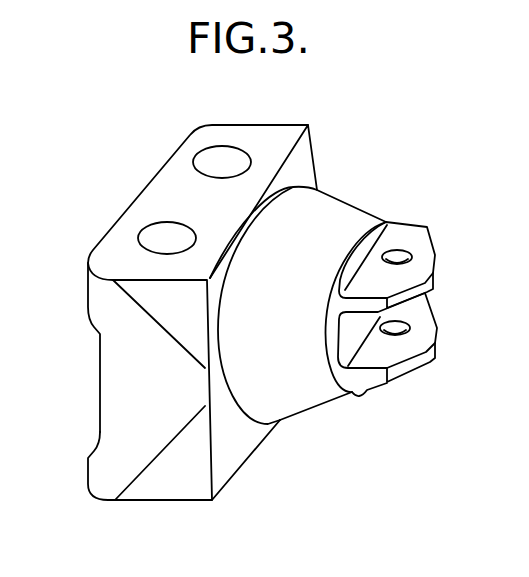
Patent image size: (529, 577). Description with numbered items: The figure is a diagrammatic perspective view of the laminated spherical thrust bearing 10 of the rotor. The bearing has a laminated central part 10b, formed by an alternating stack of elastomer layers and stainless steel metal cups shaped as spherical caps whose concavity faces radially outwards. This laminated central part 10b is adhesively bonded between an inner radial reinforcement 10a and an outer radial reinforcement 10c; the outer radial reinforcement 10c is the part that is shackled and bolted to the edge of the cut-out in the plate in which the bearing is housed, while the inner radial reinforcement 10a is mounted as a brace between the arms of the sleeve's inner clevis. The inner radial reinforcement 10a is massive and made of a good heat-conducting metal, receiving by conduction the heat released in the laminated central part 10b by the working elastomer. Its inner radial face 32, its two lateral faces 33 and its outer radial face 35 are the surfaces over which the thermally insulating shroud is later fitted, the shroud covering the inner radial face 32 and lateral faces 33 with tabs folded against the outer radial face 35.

The laminated spherical thrust bearing 10 is at (367, 191).
The inner radial reinforcement 10a is at (175, 463).
The laminated central part 10b is at (293, 377).
The outer radial reinforcement 10c is at (415, 242).
The inner radial face 32 is at (98, 367).
The lateral faces 33 is at (120, 477).
The outer radial face 35 is at (305, 170).